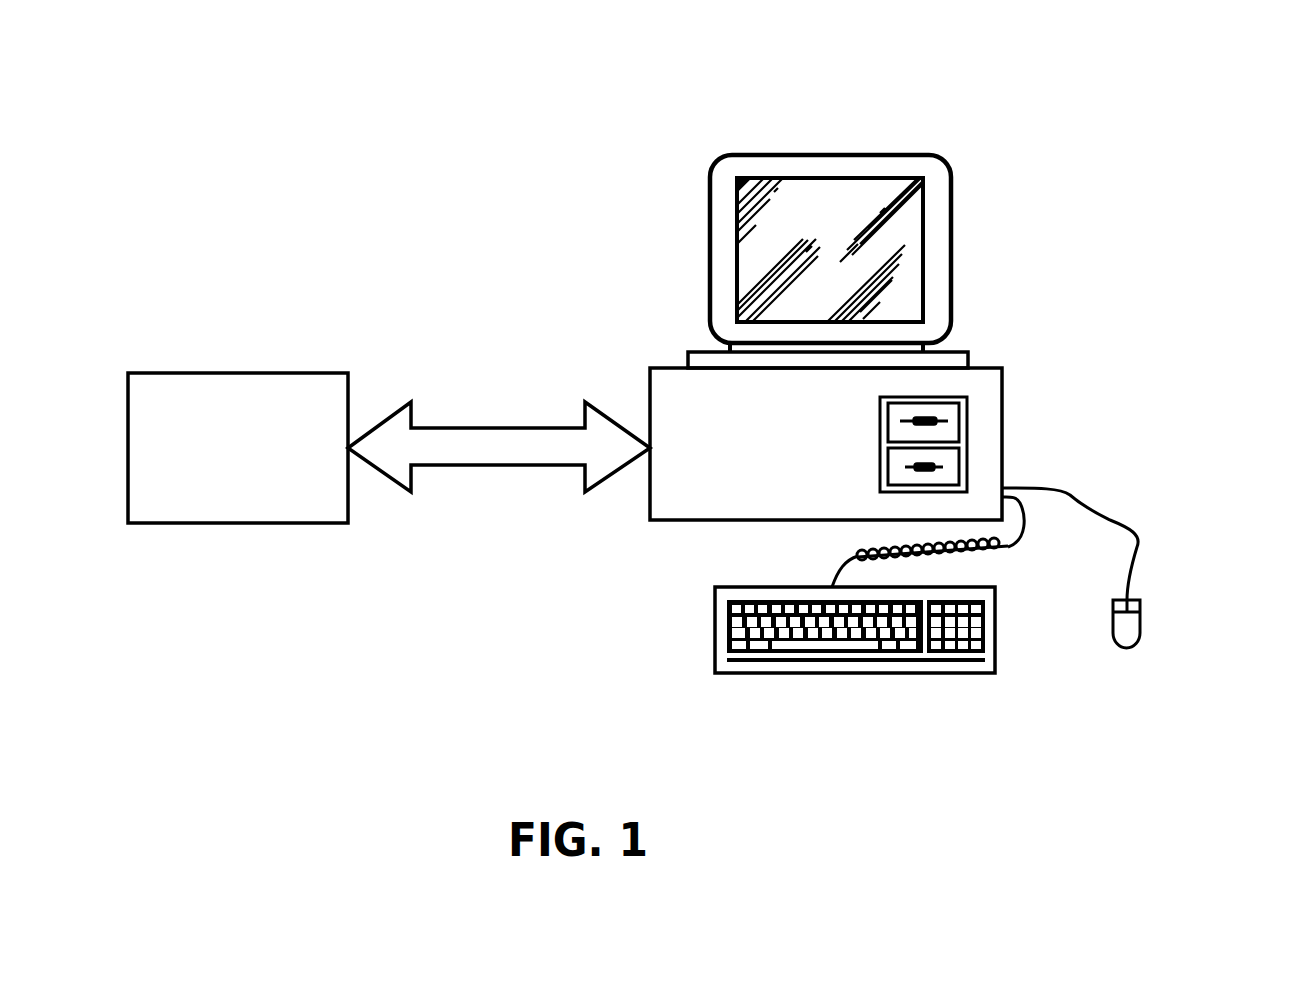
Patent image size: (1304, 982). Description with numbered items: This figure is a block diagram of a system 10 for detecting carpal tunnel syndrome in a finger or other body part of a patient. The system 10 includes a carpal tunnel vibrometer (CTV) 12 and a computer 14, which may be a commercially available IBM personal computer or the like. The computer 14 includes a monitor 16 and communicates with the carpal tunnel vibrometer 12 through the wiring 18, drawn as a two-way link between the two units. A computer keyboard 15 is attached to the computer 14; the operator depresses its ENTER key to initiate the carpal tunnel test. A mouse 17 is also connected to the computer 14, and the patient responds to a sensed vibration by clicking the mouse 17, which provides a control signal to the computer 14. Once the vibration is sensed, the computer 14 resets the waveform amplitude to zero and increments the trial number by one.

The system 10 is at (172, 190).
The carpal tunnel vibrometer 12 is at (292, 373).
The computer 14 is at (1002, 392).
The computer keyboard 15 is at (858, 673).
The monitor 16 is at (950, 227).
The mouse 17 is at (1140, 628).
The wiring 18 is at (500, 465).